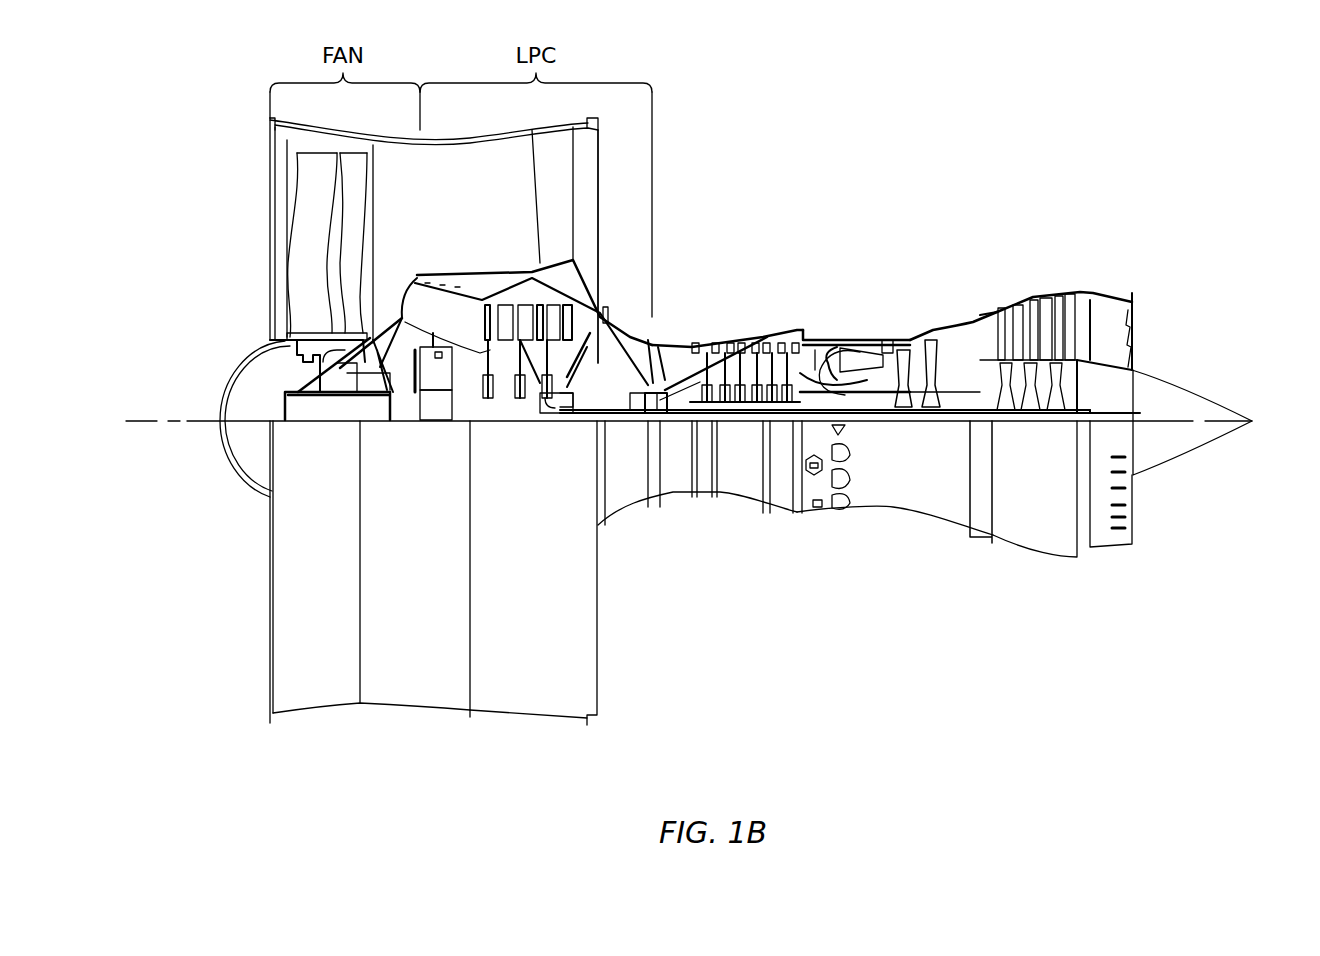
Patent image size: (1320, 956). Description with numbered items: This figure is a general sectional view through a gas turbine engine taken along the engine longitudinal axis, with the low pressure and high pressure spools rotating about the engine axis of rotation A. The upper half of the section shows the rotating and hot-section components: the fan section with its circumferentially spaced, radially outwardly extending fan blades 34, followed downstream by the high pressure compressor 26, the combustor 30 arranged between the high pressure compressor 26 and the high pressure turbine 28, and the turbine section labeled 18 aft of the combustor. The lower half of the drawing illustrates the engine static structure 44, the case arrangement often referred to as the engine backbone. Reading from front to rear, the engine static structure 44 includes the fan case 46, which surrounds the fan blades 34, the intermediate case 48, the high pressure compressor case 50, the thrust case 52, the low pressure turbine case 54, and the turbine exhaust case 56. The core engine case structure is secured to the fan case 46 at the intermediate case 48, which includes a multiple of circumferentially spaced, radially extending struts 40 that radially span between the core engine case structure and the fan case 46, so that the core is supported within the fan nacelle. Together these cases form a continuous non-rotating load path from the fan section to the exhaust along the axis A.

The low pressure turbine 18 is at (1075, 290).
The high pressure compressor 26 is at (793, 320).
The high pressure turbine 28 is at (933, 320).
The combustor 30 is at (897, 320).
The fan blades 34 is at (298, 263).
The struts 40 is at (557, 158).
The engine static structure 44 is at (1143, 550).
The fan case 46 is at (270, 723).
The intermediate case 48 is at (653, 513).
The high pressure compressor case 50 is at (795, 527).
The thrust case 52 is at (990, 555).
The low pressure turbine case 54 is at (1077, 560).
The turbine exhaust case 56 is at (1130, 560).
The engine axis of rotation A is at (1203, 421).